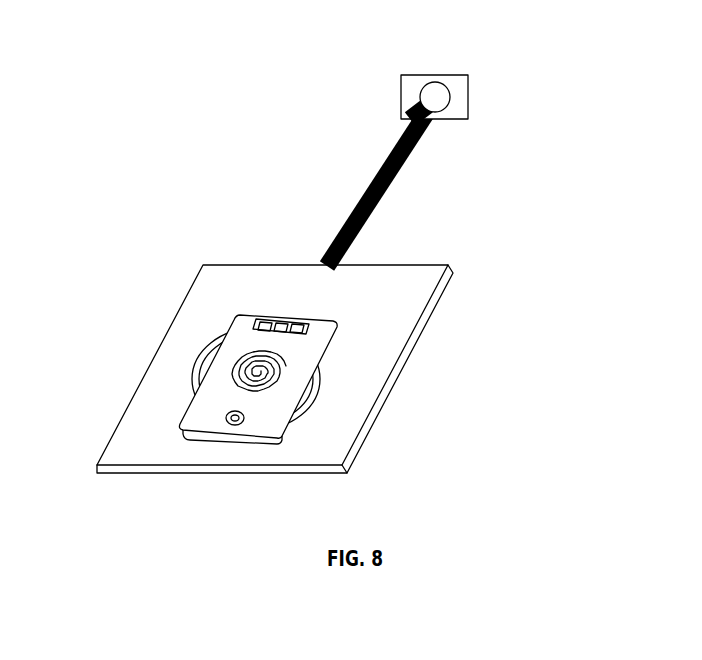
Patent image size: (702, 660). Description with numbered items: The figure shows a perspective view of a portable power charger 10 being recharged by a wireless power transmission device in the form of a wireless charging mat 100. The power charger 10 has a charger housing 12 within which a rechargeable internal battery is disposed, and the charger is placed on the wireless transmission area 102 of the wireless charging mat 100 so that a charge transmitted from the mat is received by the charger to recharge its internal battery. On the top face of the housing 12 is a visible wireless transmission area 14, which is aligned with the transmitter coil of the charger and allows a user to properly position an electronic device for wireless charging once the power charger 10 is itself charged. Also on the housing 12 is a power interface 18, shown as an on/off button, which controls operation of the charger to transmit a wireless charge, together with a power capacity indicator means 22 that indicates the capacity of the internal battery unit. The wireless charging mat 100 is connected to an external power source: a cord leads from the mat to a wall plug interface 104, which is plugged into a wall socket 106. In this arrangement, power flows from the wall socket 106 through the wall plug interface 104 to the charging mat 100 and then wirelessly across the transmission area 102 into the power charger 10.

The portable power charger 10 is at (238, 379).
The charger housing 12 is at (203, 422).
The wireless transmission area 14 is at (256, 378).
The power interface 18 is at (232, 423).
The power capacity indicator means 22 is at (285, 318).
The wireless charging mat 100 is at (398, 319).
The wireless transmission area 102 is at (180, 370).
The wall plug interface 104 is at (435, 98).
The wall socket 106 is at (457, 83).